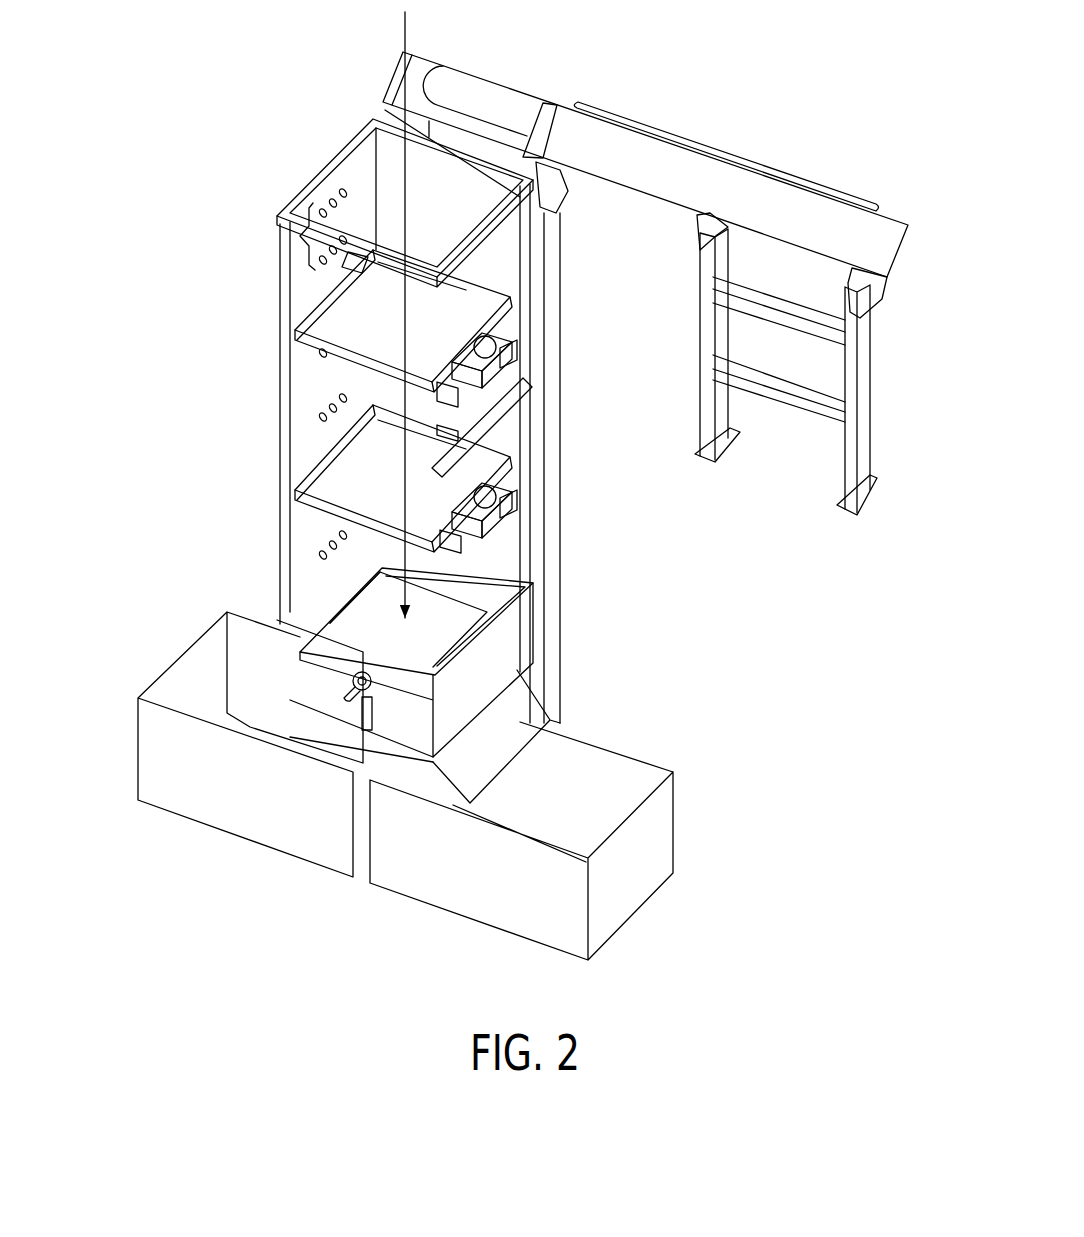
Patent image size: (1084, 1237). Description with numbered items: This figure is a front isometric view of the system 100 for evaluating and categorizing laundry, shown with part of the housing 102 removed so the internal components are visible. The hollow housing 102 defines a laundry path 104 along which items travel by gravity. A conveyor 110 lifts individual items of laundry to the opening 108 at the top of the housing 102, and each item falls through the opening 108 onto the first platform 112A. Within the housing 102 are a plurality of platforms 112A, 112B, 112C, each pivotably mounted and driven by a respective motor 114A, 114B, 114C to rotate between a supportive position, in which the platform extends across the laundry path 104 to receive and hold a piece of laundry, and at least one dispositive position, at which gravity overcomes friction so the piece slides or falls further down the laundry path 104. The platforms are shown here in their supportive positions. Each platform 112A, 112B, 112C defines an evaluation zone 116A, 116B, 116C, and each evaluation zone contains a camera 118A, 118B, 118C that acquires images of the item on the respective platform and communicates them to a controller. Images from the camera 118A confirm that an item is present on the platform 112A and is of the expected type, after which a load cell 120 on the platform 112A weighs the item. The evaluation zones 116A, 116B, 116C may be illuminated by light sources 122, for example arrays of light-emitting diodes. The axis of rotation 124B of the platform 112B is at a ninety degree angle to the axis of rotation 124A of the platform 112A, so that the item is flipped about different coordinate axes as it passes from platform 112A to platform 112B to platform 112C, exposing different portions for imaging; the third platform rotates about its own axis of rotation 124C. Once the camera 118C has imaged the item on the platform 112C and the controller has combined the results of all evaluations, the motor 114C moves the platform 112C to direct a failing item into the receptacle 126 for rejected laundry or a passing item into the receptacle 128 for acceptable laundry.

The system 100 is at (296, 96).
The housing 102 is at (314, 179).
The laundry path 104 is at (402, 30).
The opening 108 is at (341, 154).
The conveyor 110 is at (729, 153).
The first platform 112A is at (466, 312).
The second platform 112B is at (333, 490).
The third platform 112C is at (349, 627).
The motor 114A is at (491, 342).
The motor 114B is at (490, 502).
The motor 114C is at (359, 673).
The evaluation zone 116A is at (489, 249).
The evaluation zone 116B is at (499, 431).
The evaluation zone 116C is at (486, 573).
The camera 118A is at (357, 268).
The camera 118B is at (458, 397).
The camera 118C is at (466, 543).
The load cell 120 is at (488, 370).
The light sources 122 is at (301, 238).
The axis of rotation 124A is at (343, 297).
The axis of rotation 124B is at (378, 472).
The axis of rotation 124C is at (393, 641).
The receptacle 126 is at (590, 787).
The receptacle 128 is at (243, 692).